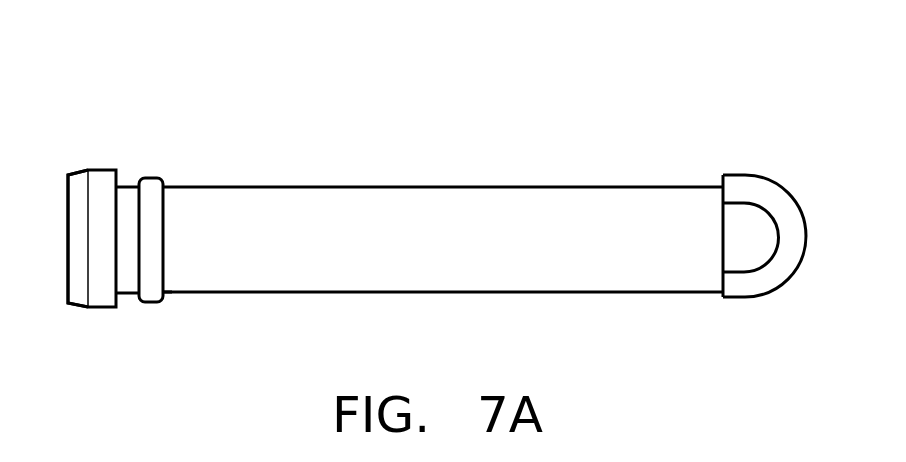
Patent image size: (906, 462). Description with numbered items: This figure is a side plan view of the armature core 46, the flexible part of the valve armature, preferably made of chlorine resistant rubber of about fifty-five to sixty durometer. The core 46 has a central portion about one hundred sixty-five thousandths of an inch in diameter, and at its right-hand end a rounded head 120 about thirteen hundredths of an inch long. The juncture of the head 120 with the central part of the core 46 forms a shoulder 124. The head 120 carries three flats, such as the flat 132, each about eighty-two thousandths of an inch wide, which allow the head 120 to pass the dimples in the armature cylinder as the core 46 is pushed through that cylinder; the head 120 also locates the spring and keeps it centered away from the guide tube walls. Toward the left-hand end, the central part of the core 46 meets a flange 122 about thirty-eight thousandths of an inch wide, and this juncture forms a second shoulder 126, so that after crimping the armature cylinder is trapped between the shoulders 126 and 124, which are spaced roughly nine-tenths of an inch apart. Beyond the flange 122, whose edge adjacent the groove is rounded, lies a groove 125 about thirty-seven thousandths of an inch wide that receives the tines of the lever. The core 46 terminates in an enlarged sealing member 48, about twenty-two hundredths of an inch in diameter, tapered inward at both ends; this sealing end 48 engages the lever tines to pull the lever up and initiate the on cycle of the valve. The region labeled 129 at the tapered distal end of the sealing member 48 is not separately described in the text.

The armature core 46 is at (612, 195).
The sealing member 48 is at (98, 300).
The rounded head 120 is at (769, 283).
The flange 122 is at (153, 180).
The shoulder 124 is at (723, 295).
The groove 125 is at (128, 184).
The shoulder 126 is at (165, 297).
The chamfer 129 is at (78, 300).
The flat 132 is at (758, 217).